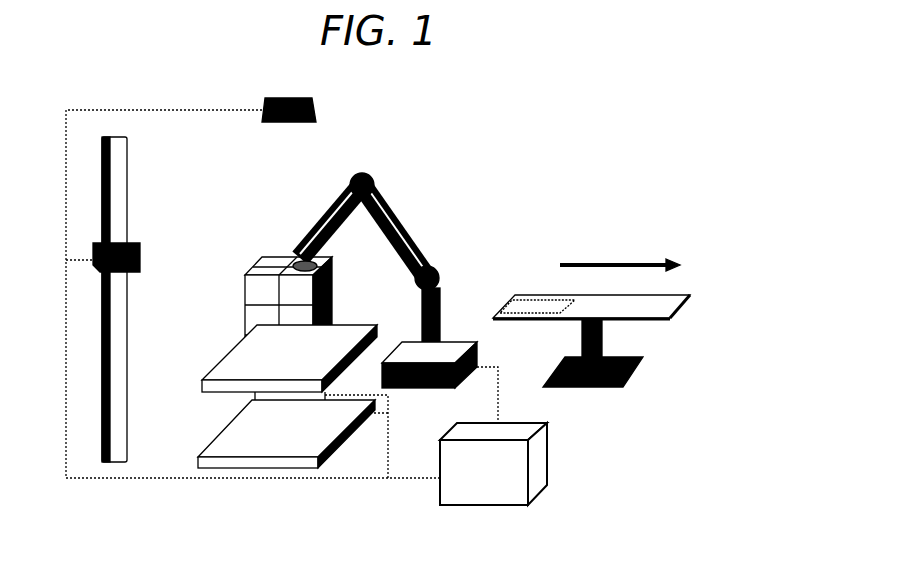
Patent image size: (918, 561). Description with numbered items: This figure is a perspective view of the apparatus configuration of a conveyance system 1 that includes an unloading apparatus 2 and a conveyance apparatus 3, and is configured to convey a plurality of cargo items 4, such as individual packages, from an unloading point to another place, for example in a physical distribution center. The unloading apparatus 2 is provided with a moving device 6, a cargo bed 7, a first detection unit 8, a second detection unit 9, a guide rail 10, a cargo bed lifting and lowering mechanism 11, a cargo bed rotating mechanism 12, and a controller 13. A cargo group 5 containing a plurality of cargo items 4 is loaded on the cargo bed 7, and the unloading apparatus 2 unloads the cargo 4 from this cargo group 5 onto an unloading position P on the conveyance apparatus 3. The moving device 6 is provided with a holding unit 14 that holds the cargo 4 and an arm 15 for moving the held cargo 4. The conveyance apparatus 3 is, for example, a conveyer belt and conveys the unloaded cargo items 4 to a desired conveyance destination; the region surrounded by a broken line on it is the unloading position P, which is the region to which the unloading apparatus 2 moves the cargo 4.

The conveyance system 1 is at (346, 272).
The unloading apparatus 2 is at (369, 132).
The conveyance apparatus 3 is at (594, 321).
The cargo items 4 is at (288, 295).
The cargo group 5 is at (230, 239).
The moving device 6 is at (393, 269).
The cargo bed 7 is at (290, 341).
The first detection unit 8 is at (297, 99).
The second detection unit 9 is at (126, 244).
The guide rail 10 is at (130, 294).
The cargo bed lifting and lowering mechanism 11 is at (286, 438).
The cargo bed rotating mechanism 12 is at (313, 423).
The controller 13 is at (509, 458).
The holding unit 14 is at (327, 255).
The arm 15 is at (399, 230).
The unloading position P is at (537, 290).